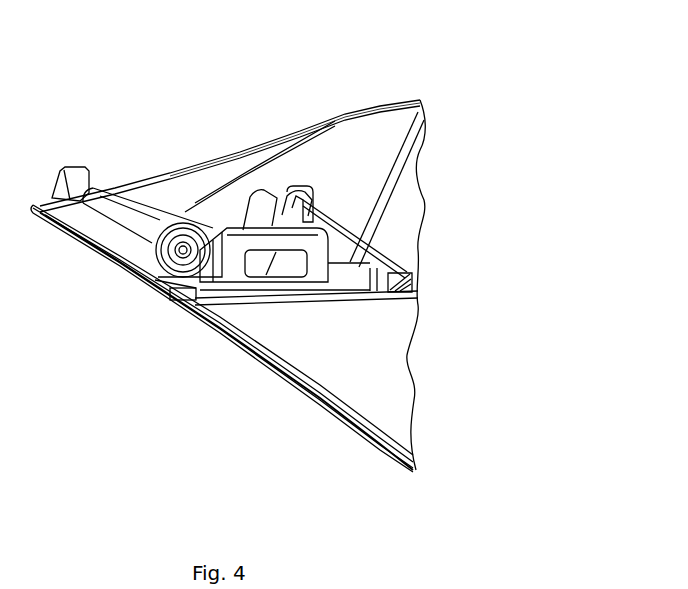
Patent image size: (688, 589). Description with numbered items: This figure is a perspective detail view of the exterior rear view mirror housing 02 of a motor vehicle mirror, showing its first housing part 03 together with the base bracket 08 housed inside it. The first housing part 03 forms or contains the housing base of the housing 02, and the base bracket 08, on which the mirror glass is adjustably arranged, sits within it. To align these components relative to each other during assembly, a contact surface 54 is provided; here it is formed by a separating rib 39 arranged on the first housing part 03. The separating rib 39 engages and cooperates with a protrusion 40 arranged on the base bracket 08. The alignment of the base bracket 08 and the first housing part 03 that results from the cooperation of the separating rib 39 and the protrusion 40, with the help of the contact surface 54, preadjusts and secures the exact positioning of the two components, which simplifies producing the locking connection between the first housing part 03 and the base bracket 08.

The exterior rear view mirror housing 02 is at (316, 406).
The first housing part 03 is at (372, 368).
The base bracket 08 is at (342, 143).
The separating rib 39 is at (158, 252).
The protrusion 40 is at (156, 296).
The contact surface 54 is at (152, 262).